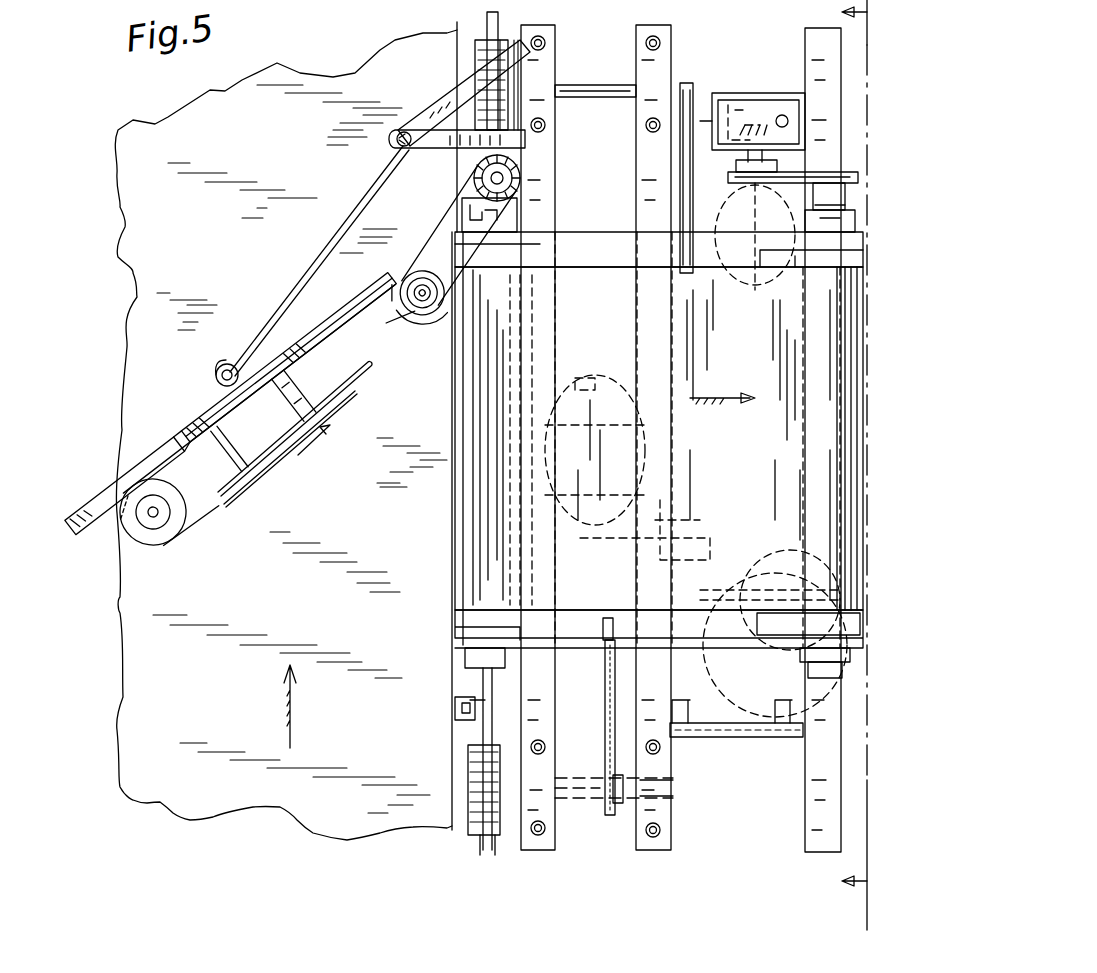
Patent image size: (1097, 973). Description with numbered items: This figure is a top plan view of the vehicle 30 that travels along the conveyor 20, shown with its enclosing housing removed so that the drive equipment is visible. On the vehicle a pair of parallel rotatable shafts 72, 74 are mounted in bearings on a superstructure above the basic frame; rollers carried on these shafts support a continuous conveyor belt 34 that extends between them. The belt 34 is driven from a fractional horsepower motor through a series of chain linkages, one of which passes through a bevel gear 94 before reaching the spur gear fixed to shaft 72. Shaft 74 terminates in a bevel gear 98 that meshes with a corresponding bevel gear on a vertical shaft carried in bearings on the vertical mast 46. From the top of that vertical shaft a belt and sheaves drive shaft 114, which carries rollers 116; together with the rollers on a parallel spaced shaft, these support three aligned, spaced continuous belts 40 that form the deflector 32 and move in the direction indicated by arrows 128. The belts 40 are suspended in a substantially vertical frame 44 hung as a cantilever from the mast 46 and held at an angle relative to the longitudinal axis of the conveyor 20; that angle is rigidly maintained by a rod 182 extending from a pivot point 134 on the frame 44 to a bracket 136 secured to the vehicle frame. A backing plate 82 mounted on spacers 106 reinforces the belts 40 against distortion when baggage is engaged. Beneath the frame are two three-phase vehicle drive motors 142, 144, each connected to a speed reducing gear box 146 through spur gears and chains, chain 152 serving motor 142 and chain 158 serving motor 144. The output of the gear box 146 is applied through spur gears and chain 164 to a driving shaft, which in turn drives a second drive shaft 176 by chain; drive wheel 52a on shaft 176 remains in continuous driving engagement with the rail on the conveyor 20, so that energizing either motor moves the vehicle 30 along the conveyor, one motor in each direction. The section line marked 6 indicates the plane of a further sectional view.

The conveyor 20 is at (195, 780).
The vehicle 30 is at (330, 890).
The deflector 32 is at (256, 509).
The conveyor belt 34 is at (480, 546).
The moving belts 40 is at (370, 368).
The frame 44 is at (200, 414).
The mast 46 is at (470, 203).
The drive wheel 52a is at (477, 55).
The section line 6- 6 is at (839, 465).
The rotatable shaft 72 is at (838, 188).
The rotatable shaft 74 is at (468, 664).
The backing plate 82 is at (272, 462).
The bevel gear 94 is at (742, 93).
The bevel gear 98 is at (522, 196).
The spacers 106 is at (287, 404).
The shaft 114 is at (428, 318).
The rollers 116 is at (402, 316).
The arrows 128 is at (305, 456).
The pivot point 134 is at (226, 364).
The bracket 136 is at (430, 112).
The vehicle drive motor 142 is at (760, 525).
The vehicle drive motor 144 is at (582, 380).
The speed reducing gear box 146 is at (648, 592).
The chain 152 is at (735, 738).
The chain 158 is at (665, 535).
The chain 164 is at (606, 680).
The second drive shaft 176 is at (585, 85).
The link rod 182 is at (330, 232).